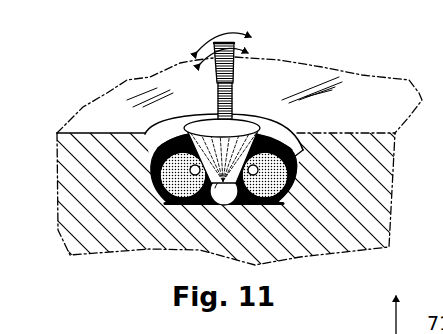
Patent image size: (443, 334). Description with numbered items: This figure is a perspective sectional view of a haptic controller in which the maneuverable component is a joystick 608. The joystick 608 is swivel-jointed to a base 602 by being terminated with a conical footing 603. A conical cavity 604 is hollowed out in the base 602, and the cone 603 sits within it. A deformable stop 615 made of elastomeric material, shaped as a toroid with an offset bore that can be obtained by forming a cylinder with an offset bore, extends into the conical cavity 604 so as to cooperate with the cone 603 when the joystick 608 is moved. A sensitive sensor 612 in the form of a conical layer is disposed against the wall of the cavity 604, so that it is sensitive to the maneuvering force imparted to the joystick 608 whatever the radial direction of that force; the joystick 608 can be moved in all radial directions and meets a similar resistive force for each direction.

The base 602 is at (98, 143).
The conical footing 603 is at (232, 124).
The conical cavity 604 is at (152, 147).
The joystick 608 is at (234, 58).
The sensitive sensor 612 is at (305, 172).
The deformable stop 615 is at (167, 194).